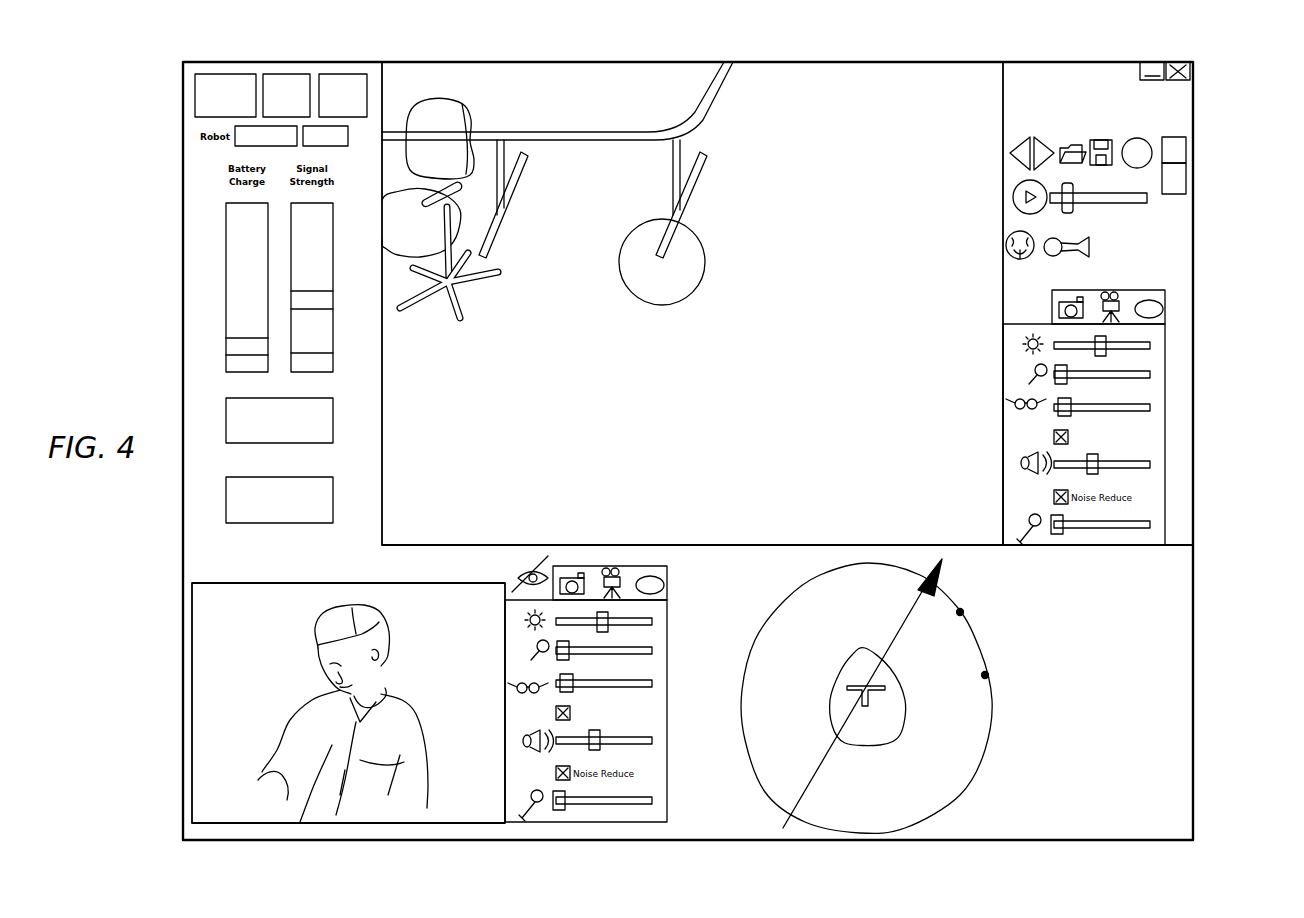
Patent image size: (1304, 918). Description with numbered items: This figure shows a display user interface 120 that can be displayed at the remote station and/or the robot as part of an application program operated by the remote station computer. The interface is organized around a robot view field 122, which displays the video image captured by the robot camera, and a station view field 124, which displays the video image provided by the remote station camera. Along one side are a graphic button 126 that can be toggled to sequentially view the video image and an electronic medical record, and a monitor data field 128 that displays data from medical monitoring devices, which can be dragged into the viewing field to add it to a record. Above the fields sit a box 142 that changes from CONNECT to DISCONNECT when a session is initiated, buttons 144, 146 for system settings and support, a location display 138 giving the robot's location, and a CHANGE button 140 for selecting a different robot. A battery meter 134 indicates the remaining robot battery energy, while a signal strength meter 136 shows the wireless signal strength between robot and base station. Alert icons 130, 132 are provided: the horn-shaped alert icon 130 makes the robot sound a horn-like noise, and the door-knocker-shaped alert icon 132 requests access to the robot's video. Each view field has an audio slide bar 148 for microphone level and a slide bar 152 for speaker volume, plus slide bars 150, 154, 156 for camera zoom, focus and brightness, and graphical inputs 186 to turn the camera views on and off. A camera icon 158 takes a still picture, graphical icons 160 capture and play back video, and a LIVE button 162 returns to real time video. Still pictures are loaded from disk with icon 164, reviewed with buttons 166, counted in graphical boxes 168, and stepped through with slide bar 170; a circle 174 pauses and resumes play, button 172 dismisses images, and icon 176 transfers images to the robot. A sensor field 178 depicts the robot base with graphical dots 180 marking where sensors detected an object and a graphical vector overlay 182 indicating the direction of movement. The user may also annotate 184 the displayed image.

The display user interface 120 is at (1098, 597).
The robot view field 122 is at (558, 237).
The station view field 124 is at (323, 713).
The graphic button 126 is at (228, 498).
The monitor data field 128 is at (228, 407).
The alert icon 130 is at (1095, 247).
The alert icon 132 is at (1005, 243).
The battery meter 134 is at (230, 298).
The signal strength meter 136 is at (316, 325).
The location display 138 is at (238, 145).
The CHANGE button 140 is at (347, 135).
The box 142 is at (195, 99).
The button 144 is at (289, 75).
The button 146 is at (342, 74).
The audio slide bar 148 is at (650, 800).
The slide bar 150 is at (650, 650).
The slide bar 152 is at (643, 742).
The slide bar 154 is at (645, 685).
The slide bar 156 is at (650, 622).
The camera icon 158 is at (577, 575).
The graphical icons 160 is at (612, 573).
The LIVE button 162 is at (652, 573).
The icon 164 is at (1067, 145).
The buttons 166 is at (1010, 155).
The graphical boxes 168 is at (1184, 162).
The slide bar 170 is at (1125, 200).
The button 172 is at (1141, 140).
The circle 174 is at (1012, 195).
The icon 176 is at (515, 574).
The sensor field 178 is at (990, 740).
The graphical dots 180 is at (960, 612).
The graphical vector overlay 182 is at (900, 632).
The annotation 184 is at (705, 275).
The graphical inputs 186 is at (642, 713).